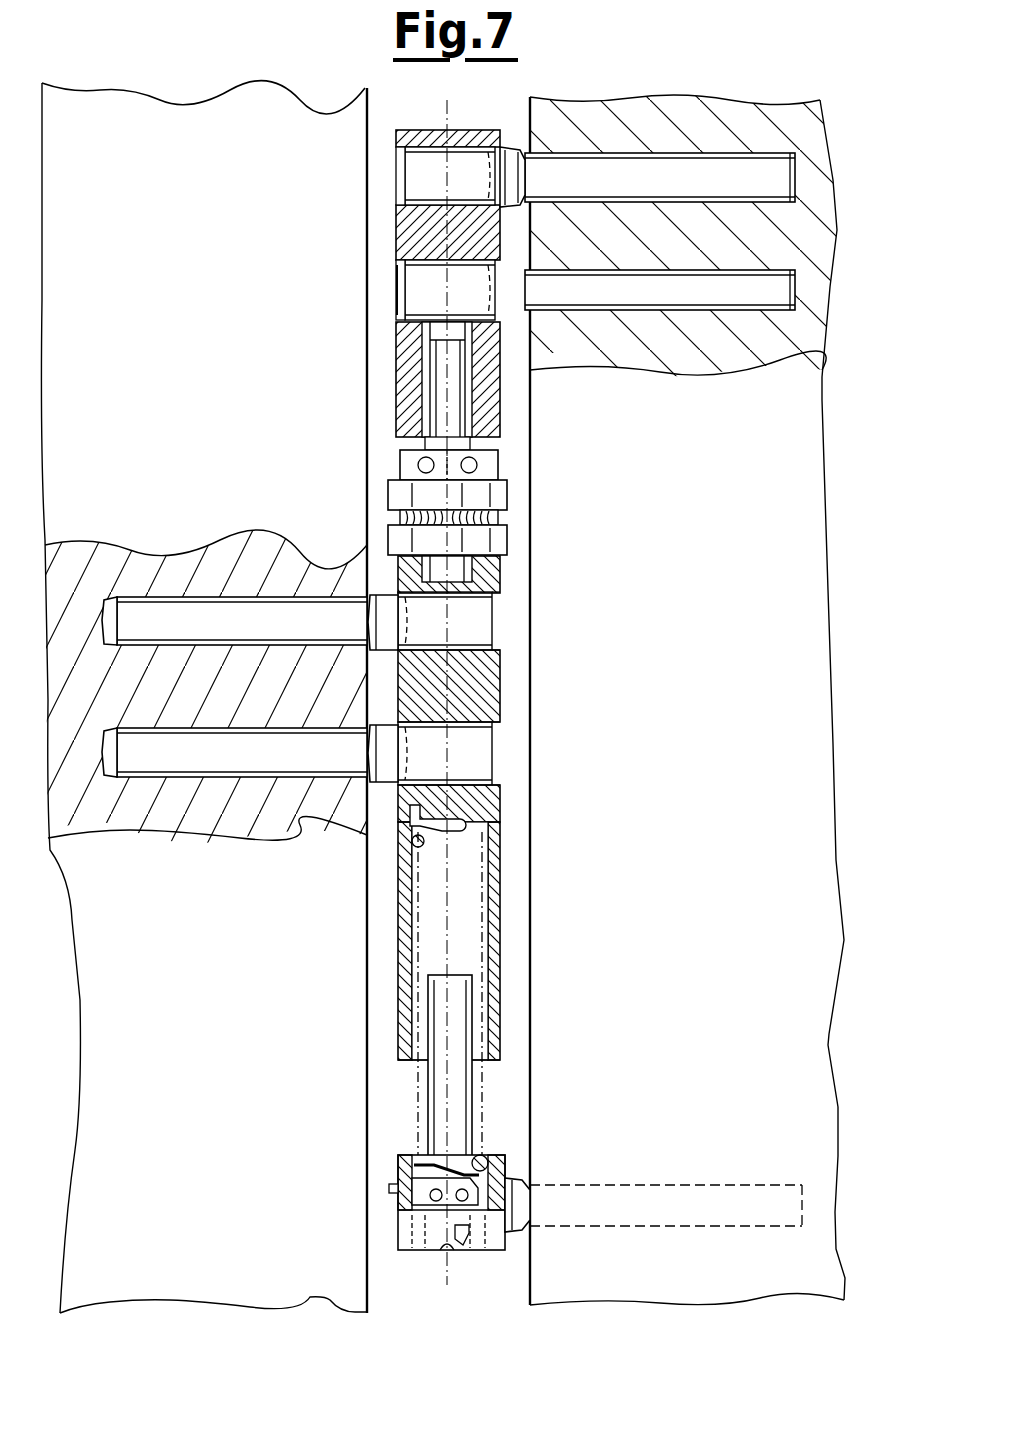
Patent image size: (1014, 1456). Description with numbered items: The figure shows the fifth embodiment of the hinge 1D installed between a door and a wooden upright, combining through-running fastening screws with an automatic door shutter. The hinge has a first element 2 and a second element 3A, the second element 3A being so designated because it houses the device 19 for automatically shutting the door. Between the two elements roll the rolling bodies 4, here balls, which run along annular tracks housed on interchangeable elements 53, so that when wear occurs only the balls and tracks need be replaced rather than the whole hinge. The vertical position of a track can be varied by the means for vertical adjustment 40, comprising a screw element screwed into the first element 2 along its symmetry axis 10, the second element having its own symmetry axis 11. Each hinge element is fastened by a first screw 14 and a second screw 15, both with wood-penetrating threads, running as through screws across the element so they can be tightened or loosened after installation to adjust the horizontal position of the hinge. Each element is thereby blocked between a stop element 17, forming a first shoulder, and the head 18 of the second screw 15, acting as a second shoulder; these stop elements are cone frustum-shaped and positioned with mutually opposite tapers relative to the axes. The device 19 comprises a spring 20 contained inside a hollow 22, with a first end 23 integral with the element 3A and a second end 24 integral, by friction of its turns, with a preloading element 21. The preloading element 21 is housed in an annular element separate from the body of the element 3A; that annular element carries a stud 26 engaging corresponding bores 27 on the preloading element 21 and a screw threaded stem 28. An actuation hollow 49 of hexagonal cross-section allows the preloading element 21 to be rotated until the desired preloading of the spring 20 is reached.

The hinge 1D is at (637, 78).
The first element 2 is at (405, 228).
The second element 3A is at (522, 676).
The rolling bodies 4 is at (505, 520).
The symmetry axis 10 is at (447, 125).
The symmetry axis 11 is at (455, 1268).
The first screw 14 is at (700, 170).
The second screw 15 is at (718, 300).
The stop element 17 is at (520, 157).
The head 18 is at (410, 290).
The device for automatically shutting the door 19 is at (518, 855).
The spring 20 is at (482, 1100).
The preloading element 21 is at (440, 1228).
The hollow 22 is at (470, 932).
The first end 23 is at (412, 818).
The second end 24 is at (495, 1175).
The stud 26 is at (392, 1186).
The bores 27 is at (420, 1200).
The screw threaded stem 28 is at (690, 1200).
The means for vertical adjustment 40 is at (520, 460).
The actuation hollow 49 is at (475, 1245).
The interchangeable elements 53 is at (510, 540).